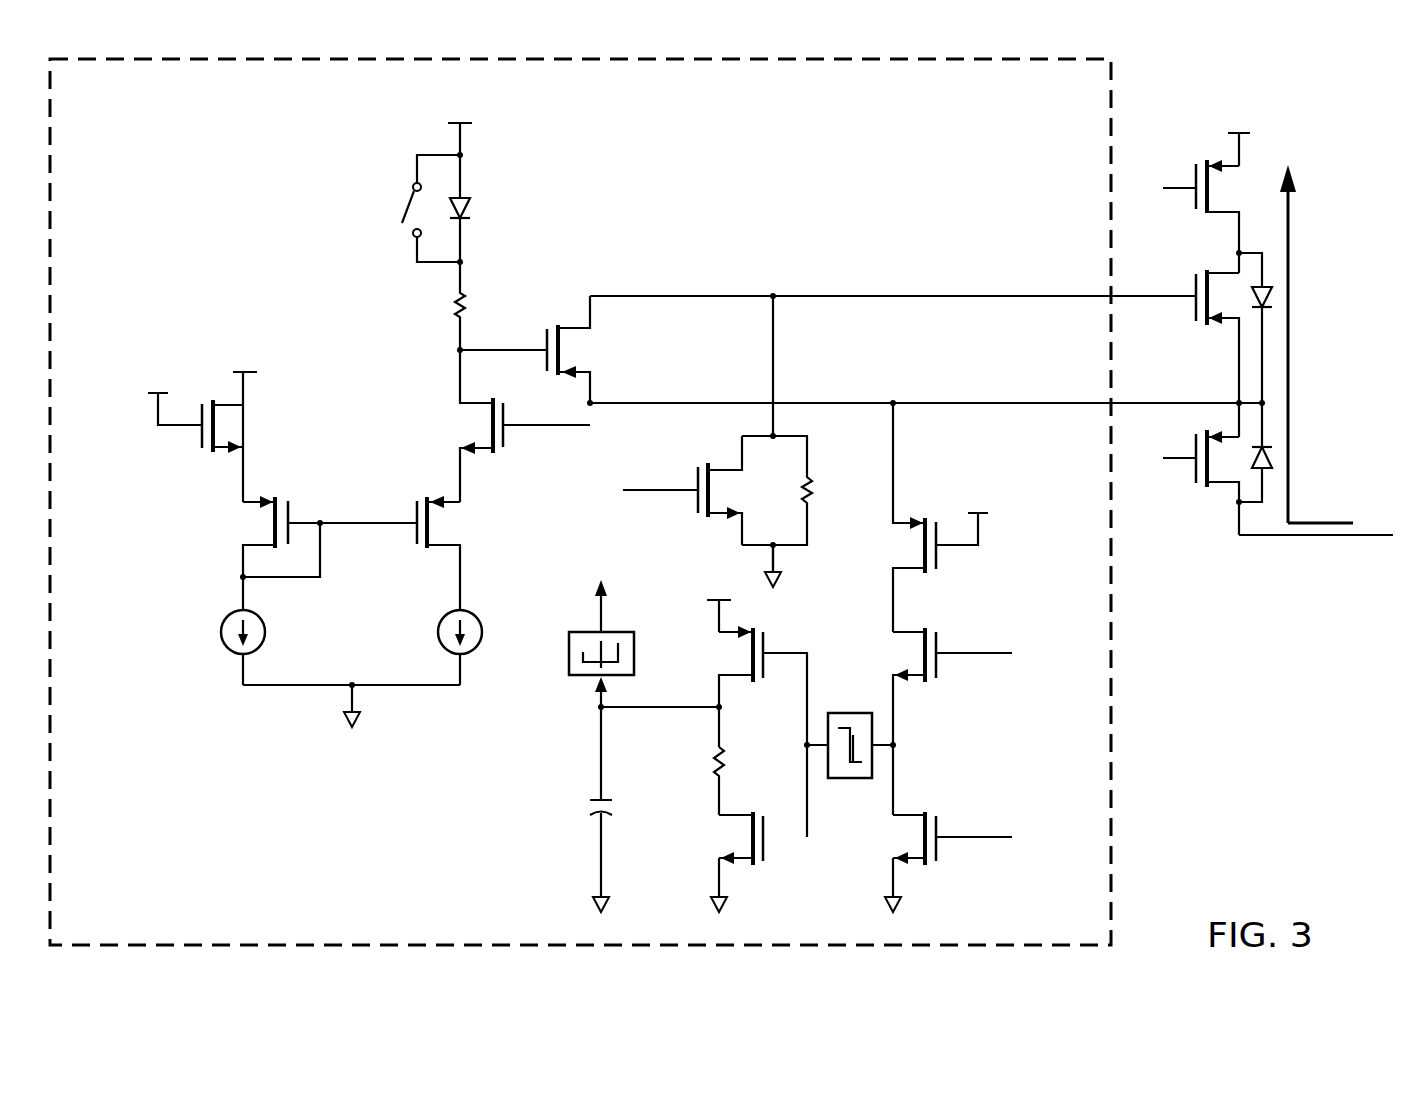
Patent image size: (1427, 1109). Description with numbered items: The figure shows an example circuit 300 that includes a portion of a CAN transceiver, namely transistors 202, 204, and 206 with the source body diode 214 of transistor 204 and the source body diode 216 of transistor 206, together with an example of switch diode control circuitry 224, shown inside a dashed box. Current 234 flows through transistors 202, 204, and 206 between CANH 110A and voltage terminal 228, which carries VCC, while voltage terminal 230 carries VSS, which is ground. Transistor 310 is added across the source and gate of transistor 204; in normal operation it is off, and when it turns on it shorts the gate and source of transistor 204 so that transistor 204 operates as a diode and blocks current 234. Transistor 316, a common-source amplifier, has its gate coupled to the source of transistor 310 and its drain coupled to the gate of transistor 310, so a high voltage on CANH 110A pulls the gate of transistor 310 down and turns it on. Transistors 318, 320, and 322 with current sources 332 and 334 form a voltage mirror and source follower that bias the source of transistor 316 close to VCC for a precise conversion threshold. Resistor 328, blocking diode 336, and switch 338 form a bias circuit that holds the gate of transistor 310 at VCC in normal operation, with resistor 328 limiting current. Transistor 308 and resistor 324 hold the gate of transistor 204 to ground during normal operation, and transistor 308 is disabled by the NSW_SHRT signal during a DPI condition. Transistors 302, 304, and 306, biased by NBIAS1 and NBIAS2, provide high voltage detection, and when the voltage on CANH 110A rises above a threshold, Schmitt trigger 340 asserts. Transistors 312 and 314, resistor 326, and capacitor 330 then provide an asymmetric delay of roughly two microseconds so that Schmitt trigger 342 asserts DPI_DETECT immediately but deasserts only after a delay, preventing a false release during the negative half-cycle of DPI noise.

The CANH 110A is at (1340, 540).
The transistor 202 is at (1193, 181).
The transistor 204 is at (1193, 292).
The transistor 206 is at (1193, 452).
The source body diode 214 is at (1272, 300).
The source body diode 216 is at (1272, 458).
The switch diode control circuitry 224 is at (210, 138).
The voltage terminal 228 is at (1252, 134).
The voltage terminal 230 is at (902, 906).
The current 234 is at (1291, 237).
The circuit 300 is at (1347, 741).
The transistor 302 is at (941, 559).
The transistor 304 is at (942, 670).
The transistor 306 is at (942, 853).
The transistor 308 is at (695, 505).
The transistor 310 is at (545, 340).
The transistor 312 is at (770, 641).
The transistor 314 is at (773, 853).
The transistor 316 is at (510, 437).
The transistor 318 is at (414, 534).
The transistor 320 is at (292, 512).
The transistor 322 is at (198, 436).
The resistor 324 is at (813, 496).
The resistor 326 is at (713, 766).
The resistor 328 is at (454, 304).
The capacitor 330 is at (590, 810).
The current source 332 is at (220, 631).
The current source 334 is at (437, 631).
The diode 336 is at (470, 214).
The switch 338 is at (407, 208).
The Schmitt trigger 340 is at (851, 779).
The Schmitt trigger 342 is at (567, 658).